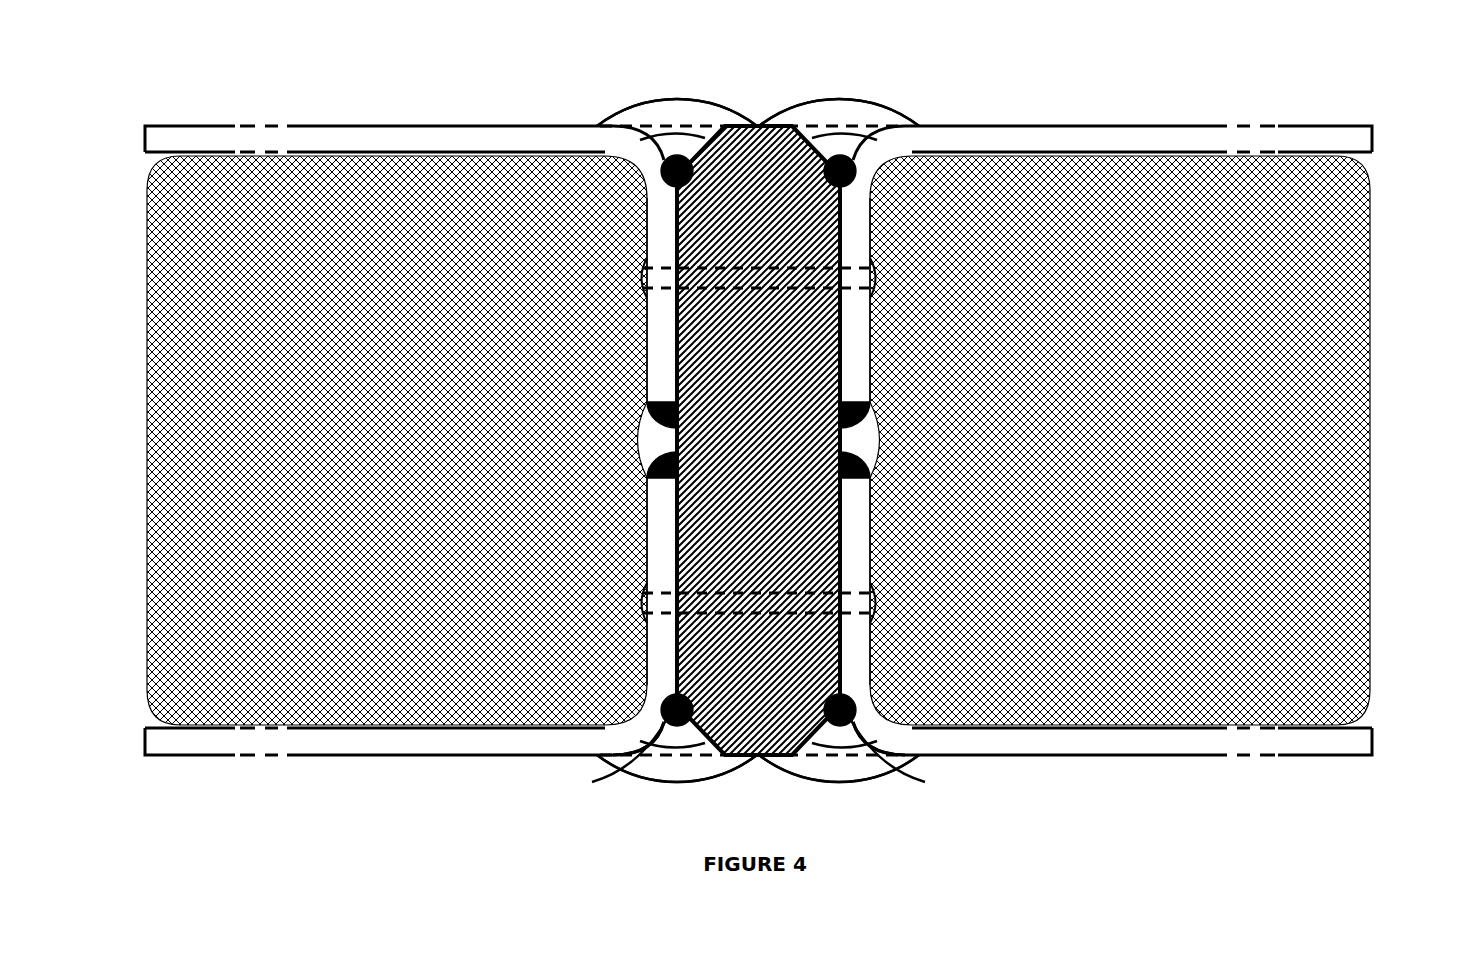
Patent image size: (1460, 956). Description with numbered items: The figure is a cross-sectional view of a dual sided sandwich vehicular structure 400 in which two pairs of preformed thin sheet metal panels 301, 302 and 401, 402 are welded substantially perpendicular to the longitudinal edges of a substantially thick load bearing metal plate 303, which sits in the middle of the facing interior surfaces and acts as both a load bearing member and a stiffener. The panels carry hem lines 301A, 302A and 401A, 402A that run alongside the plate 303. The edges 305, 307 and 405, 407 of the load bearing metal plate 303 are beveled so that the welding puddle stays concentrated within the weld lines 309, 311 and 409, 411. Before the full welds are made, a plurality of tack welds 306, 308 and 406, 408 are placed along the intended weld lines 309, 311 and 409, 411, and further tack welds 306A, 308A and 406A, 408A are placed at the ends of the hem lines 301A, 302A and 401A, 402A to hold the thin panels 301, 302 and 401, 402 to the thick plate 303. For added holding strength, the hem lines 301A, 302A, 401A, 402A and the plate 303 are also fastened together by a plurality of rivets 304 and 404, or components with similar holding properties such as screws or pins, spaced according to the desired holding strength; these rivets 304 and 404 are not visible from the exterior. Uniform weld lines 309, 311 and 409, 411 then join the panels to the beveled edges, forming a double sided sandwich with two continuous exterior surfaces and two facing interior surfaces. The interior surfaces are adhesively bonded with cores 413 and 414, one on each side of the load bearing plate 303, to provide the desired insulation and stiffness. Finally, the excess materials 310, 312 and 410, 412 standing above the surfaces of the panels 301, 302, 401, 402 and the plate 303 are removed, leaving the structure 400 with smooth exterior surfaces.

The dual sided sandwich vehicular structure 400 is at (1027, 68).
The preformed thin sheet metal panel 301 is at (470, 128).
The preformed thin sheet metal panel 302 is at (1128, 128).
The load bearing metal plate 303 is at (735, 472).
The rivets 304 is at (645, 283).
The beveled edge 305 is at (660, 172).
The tack weld 306 is at (660, 187).
The beveled edge 307 is at (858, 169).
The tack weld 308 is at (858, 187).
The weld line 309 is at (663, 112).
The excess material 310 is at (717, 93).
The weld line 311 is at (880, 118).
The excess material 312 is at (868, 100).
The hem line 301A is at (655, 328).
The hem line 302A is at (862, 328).
The tack weld 306A is at (650, 420).
The tack weld 308A is at (866, 420).
The preformed thin sheet metal panel 401 is at (352, 738).
The preformed thin sheet metal panel 402 is at (1128, 735).
The rivets 404 is at (645, 600).
The beveled edge 405 is at (640, 765).
The tack weld 406 is at (660, 704).
The beveled edge 407 is at (880, 765).
The tack weld 408 is at (858, 706).
The weld line 409 is at (665, 785).
The excess material 410 is at (677, 770).
The weld line 411 is at (845, 783).
The excess material 412 is at (812, 775).
The hem line 401A is at (650, 520).
The hem line 402A is at (866, 525).
The tack weld 406A is at (650, 468).
The tack weld 408A is at (866, 470).
The core 413 is at (178, 425).
The core 414 is at (1362, 400).